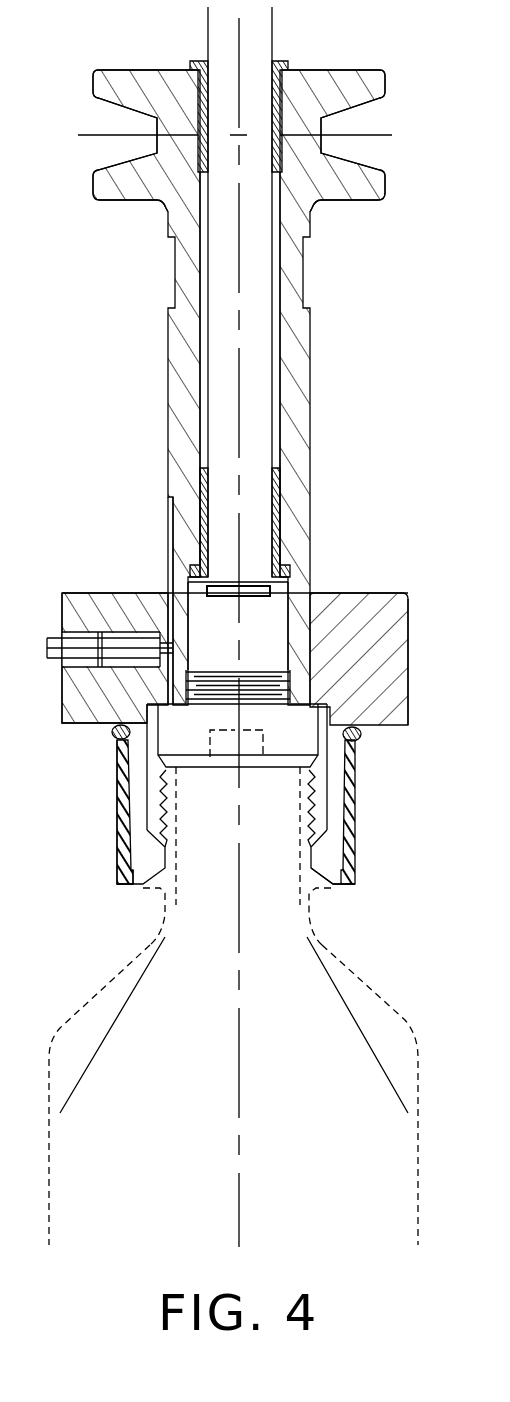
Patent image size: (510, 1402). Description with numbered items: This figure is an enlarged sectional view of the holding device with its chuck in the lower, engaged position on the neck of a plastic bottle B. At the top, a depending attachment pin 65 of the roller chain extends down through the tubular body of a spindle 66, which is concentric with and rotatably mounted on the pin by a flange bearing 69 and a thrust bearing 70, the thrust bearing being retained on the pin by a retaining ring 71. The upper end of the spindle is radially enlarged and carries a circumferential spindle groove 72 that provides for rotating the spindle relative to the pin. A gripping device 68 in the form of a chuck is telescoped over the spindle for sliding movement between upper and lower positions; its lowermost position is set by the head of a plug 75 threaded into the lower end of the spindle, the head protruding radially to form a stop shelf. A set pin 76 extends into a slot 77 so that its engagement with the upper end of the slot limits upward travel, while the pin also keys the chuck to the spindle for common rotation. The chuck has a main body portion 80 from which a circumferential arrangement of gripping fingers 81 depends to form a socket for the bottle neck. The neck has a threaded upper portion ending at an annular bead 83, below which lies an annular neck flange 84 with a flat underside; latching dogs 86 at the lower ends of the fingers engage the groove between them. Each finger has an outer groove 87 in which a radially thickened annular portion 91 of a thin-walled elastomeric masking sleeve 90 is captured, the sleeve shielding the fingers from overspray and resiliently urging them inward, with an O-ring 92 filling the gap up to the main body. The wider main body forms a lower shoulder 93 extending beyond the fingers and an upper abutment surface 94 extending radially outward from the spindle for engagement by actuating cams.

The attachment pin 65 is at (260, 272).
The spindle 66 is at (168, 352).
The gripping device 68 is at (422, 618).
The flange bearing 69 is at (200, 61).
The thrust bearing 70 is at (192, 481).
The retaining ring 71 is at (290, 596).
The spindle groove 72 is at (358, 165).
The plug 75 is at (303, 742).
The set pin 76 is at (66, 642).
The slot 77 is at (168, 527).
The main body portion 80 is at (408, 668).
The gripping fingers 81 is at (338, 793).
The annular bead 83 is at (110, 838).
The annular neck flange 84 is at (148, 906).
The latching dogs 86 is at (307, 860).
The groove 87 is at (353, 870).
The masking sleeve 90 is at (117, 795).
The radially thickened annular portion 91 is at (330, 888).
The O-ring 92 is at (113, 737).
The shoulder 93 is at (74, 726).
The upper abutment surface 94 is at (97, 594).
The plastic bottle B is at (397, 1012).